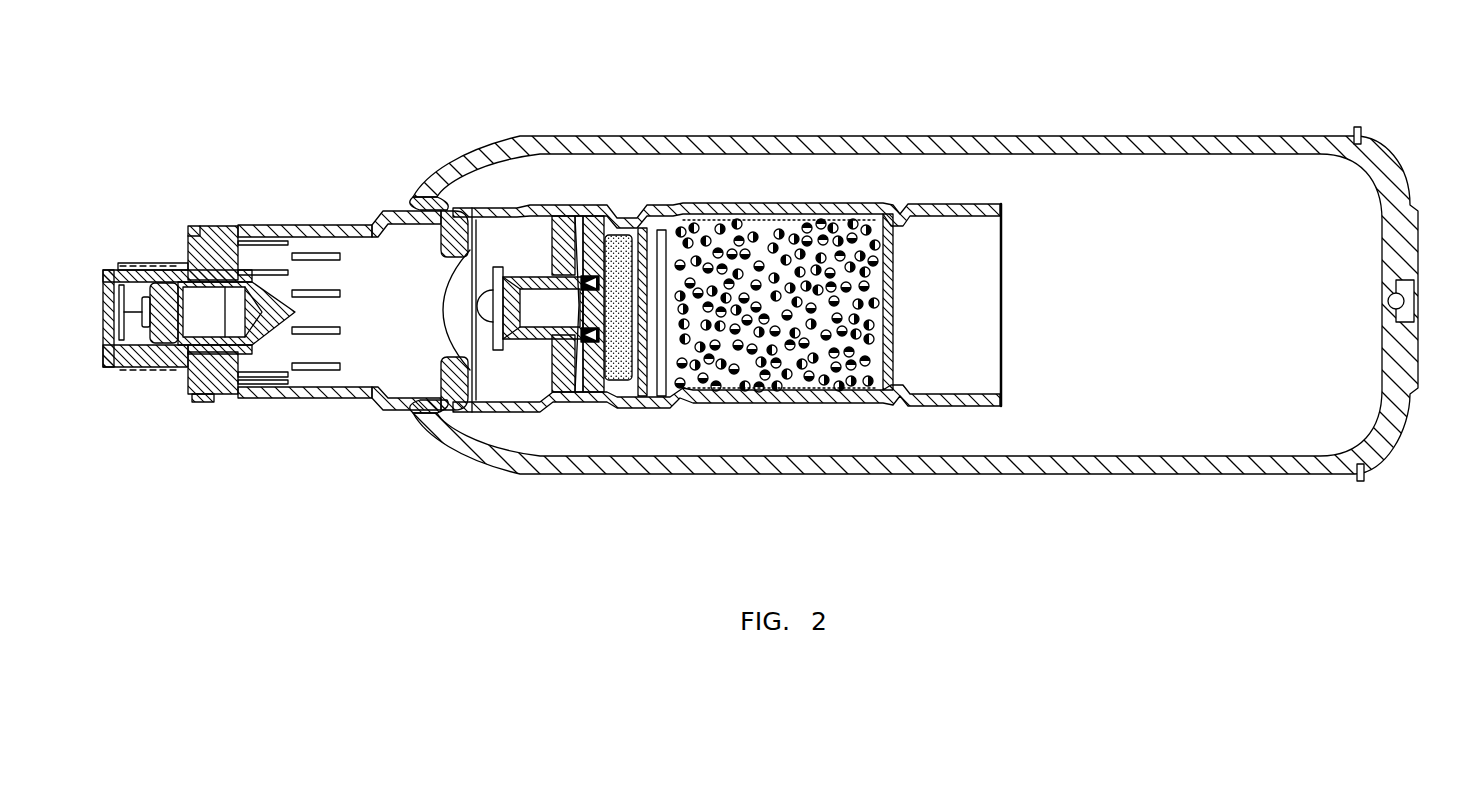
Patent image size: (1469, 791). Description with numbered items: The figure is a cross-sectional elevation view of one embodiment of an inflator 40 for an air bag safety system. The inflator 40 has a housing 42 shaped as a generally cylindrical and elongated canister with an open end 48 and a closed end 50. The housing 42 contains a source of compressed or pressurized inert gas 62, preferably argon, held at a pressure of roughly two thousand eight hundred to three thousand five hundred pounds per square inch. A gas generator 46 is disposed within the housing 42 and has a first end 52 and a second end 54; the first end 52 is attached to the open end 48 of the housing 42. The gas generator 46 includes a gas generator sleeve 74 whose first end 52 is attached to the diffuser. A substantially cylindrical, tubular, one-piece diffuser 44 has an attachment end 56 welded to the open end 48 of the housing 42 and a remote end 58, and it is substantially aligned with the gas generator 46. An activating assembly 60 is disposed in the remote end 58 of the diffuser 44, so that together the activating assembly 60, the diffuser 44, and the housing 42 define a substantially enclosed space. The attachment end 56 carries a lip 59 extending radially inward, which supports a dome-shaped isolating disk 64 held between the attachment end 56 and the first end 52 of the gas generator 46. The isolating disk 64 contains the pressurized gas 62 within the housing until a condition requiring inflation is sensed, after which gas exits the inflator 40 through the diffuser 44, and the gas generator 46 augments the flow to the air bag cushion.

The inflator 40 is at (262, 104).
The housing 42 is at (1190, 140).
The diffuser 44 is at (362, 226).
The gas generator 46 is at (648, 212).
The open end 48 is at (432, 180).
The closed end 50 is at (1400, 244).
The first end 52 is at (445, 425).
The second end 54 is at (960, 402).
The attachment end 56 is at (440, 400).
The remote end 58 is at (200, 402).
The lip 59 is at (457, 233).
The activating assembly 60 is at (198, 271).
The inert gas 62 is at (1212, 305).
The isolating disk 64 is at (444, 310).
The gas generator sleeve 74 is at (848, 206).